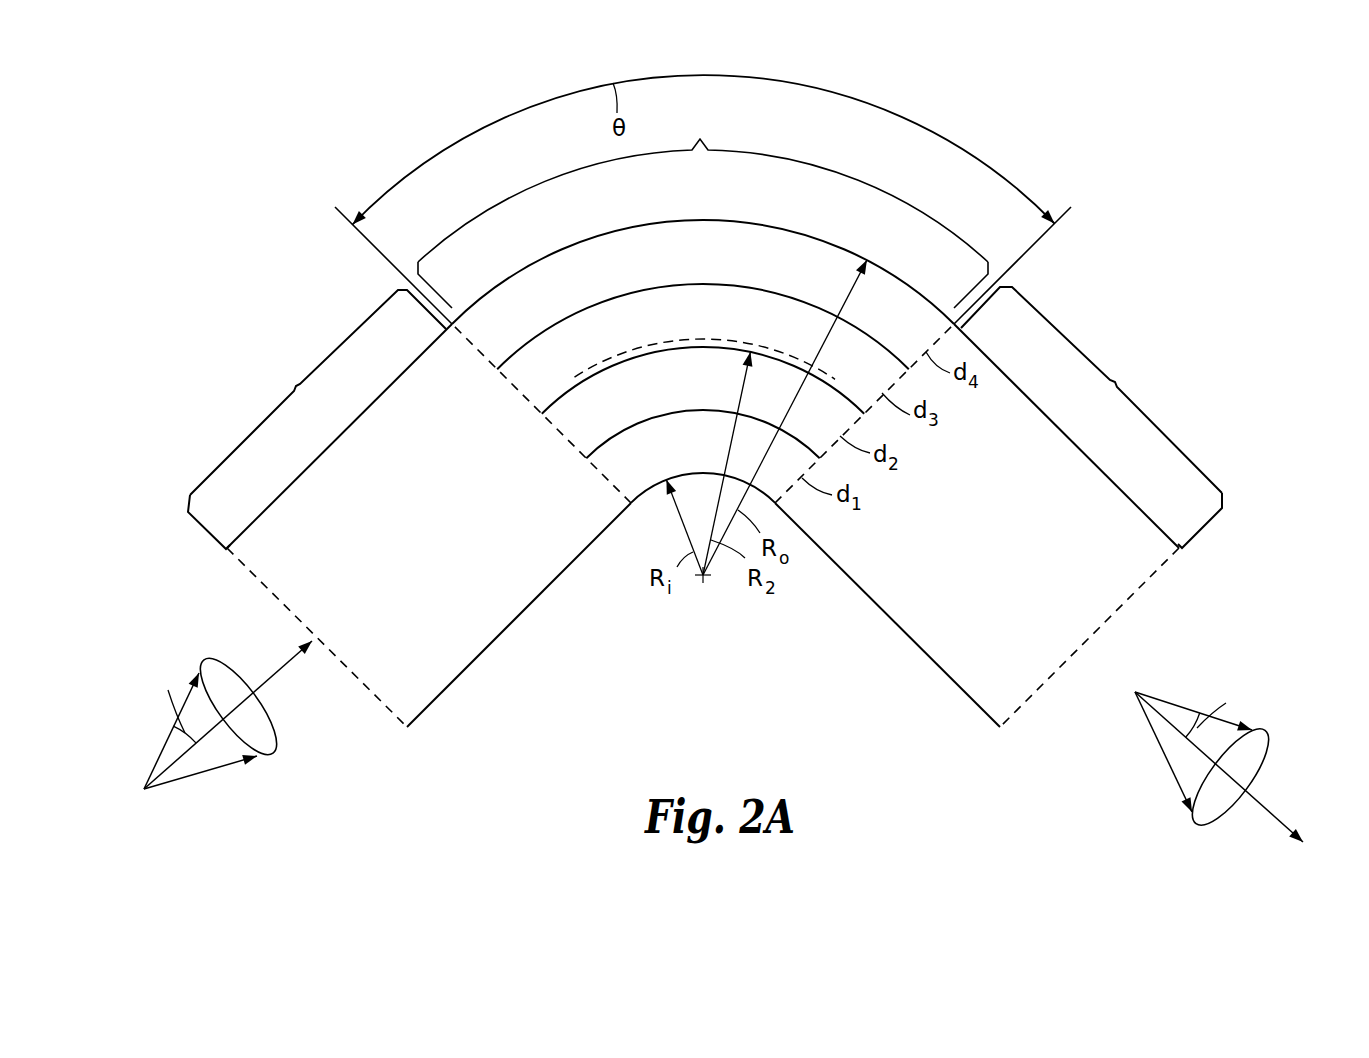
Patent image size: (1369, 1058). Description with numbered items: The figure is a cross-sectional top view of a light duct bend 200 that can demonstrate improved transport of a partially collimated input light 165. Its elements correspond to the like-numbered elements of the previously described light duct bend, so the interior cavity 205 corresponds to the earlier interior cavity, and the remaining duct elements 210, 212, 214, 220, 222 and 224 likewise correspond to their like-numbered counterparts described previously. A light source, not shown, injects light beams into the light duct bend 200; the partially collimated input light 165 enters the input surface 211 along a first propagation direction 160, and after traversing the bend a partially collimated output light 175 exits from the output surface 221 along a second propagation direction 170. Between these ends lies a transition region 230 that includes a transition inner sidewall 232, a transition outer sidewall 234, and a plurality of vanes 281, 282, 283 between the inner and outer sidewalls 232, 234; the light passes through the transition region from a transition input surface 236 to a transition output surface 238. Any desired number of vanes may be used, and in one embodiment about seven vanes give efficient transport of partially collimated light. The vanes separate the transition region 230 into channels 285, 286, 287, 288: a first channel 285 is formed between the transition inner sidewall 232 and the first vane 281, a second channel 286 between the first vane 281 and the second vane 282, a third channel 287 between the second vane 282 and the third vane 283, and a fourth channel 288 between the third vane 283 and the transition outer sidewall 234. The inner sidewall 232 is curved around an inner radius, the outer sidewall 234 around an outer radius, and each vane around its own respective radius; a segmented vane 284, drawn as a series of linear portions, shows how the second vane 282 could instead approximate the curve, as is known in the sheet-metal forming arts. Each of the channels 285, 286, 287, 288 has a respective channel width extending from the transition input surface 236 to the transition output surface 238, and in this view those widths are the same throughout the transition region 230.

The light duct bend 200 is at (1136, 165).
The interior cavity 205 is at (429, 597).
The first straight section 210 is at (317, 419).
The input surface 211 is at (379, 700).
The first section inner side wall 212 is at (494, 640).
The first section outer side wall 214 is at (304, 473).
The second straight section 220 is at (1091, 417).
The output surface 221 is at (1046, 683).
The second section inner side wall 222 is at (917, 645).
The second section outer side wall 224 is at (1088, 458).
The transition region 230 is at (703, 188).
The transition inner sidewall 232 is at (650, 493).
The transition outer sidewall 234 is at (812, 236).
The transition input surface 236 is at (463, 330).
The transition output surface 238 is at (943, 330).
The first vane 281 is at (598, 453).
The second vane 282 is at (553, 409).
The third vane 283 is at (508, 364).
The segmented vane 284 is at (576, 384).
The first channel 285 is at (671, 466).
The second channel 286 is at (671, 396).
The third channel 287 is at (671, 334).
The fourth channel 288 is at (671, 272).
The first propagation direction 160 is at (287, 662).
The partially collimated input light 165 is at (222, 782).
The second propagation direction 170 is at (1282, 821).
The partially collimated output light 175 is at (1271, 697).